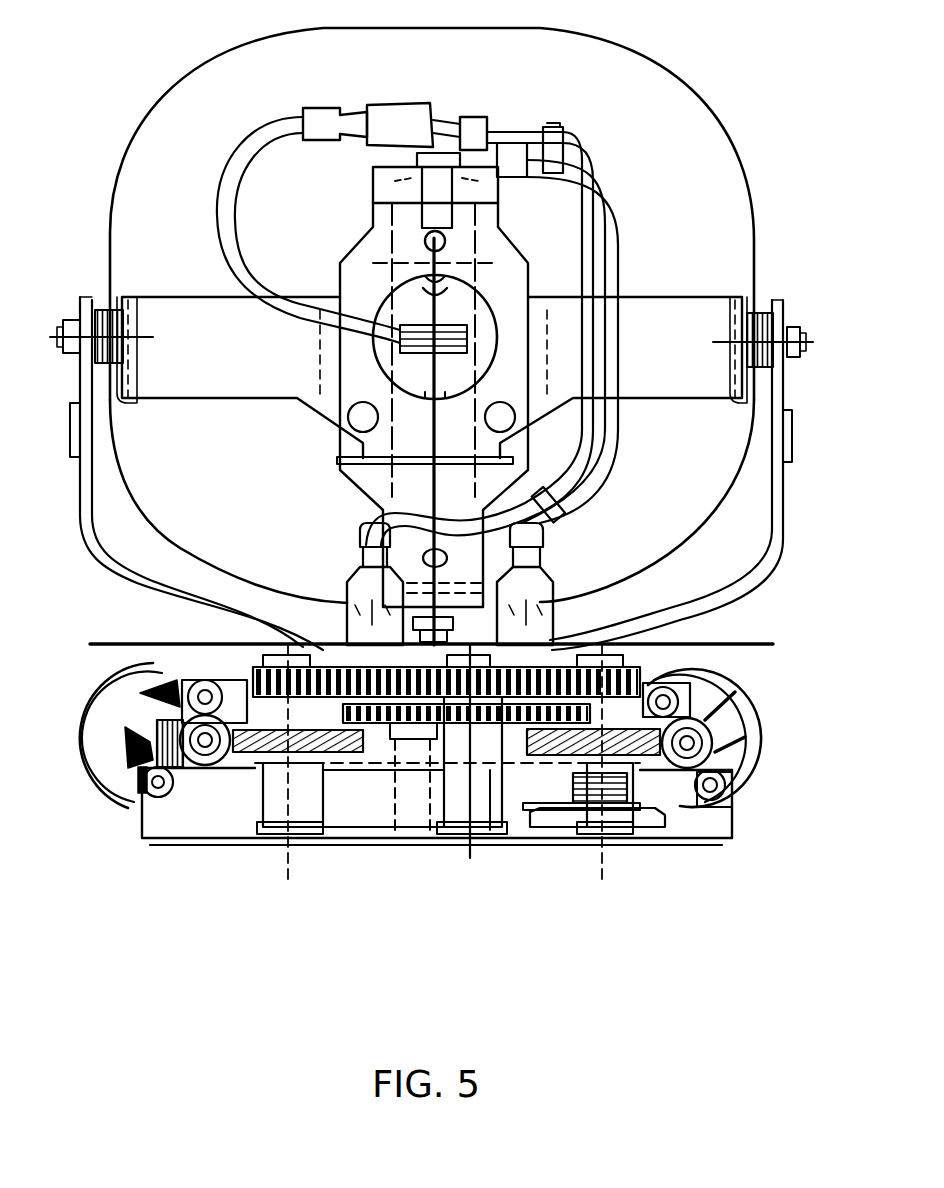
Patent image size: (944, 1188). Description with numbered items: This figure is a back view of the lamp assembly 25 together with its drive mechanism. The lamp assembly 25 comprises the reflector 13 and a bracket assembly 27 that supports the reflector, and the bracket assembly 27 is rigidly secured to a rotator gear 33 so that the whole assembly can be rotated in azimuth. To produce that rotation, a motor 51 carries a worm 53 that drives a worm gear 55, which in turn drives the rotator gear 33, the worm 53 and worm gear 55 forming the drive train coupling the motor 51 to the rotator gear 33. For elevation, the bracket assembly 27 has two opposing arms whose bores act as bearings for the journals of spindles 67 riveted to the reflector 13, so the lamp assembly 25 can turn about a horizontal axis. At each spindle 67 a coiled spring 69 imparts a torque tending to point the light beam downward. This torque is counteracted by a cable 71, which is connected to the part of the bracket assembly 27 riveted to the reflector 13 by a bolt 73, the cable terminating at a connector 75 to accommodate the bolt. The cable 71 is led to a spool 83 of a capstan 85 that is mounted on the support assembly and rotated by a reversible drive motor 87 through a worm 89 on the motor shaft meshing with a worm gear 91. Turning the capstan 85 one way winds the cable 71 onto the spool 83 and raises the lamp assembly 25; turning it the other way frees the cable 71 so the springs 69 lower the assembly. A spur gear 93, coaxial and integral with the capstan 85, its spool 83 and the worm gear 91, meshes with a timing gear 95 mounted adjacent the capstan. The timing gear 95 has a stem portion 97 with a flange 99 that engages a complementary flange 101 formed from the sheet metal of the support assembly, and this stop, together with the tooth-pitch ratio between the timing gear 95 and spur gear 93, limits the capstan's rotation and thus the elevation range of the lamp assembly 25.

The reflector 13 is at (470, 76).
The lamp assembly 25 is at (138, 103).
The bracket assembly 27 is at (790, 465).
The rotator gear 33 is at (292, 623).
The motor 51 is at (114, 803).
The worm 53 is at (203, 767).
The worm gear 55 is at (237, 760).
The spindle 67 is at (62, 337).
The coiled spring 69 is at (104, 300).
The cable 71 is at (436, 477).
The bolt 73 is at (442, 158).
The connector 75 is at (430, 190).
The spool 83 is at (625, 767).
The capstan 85 is at (717, 663).
The drive motor 87 is at (748, 712).
The worm 89 is at (700, 743).
The worm gear 91 is at (620, 766).
The spur gear 93 is at (641, 675).
The timing gear 95 is at (392, 742).
The stem portion 97 is at (490, 808).
The flange 99 is at (430, 740).
The complementary flange 101 is at (370, 826).